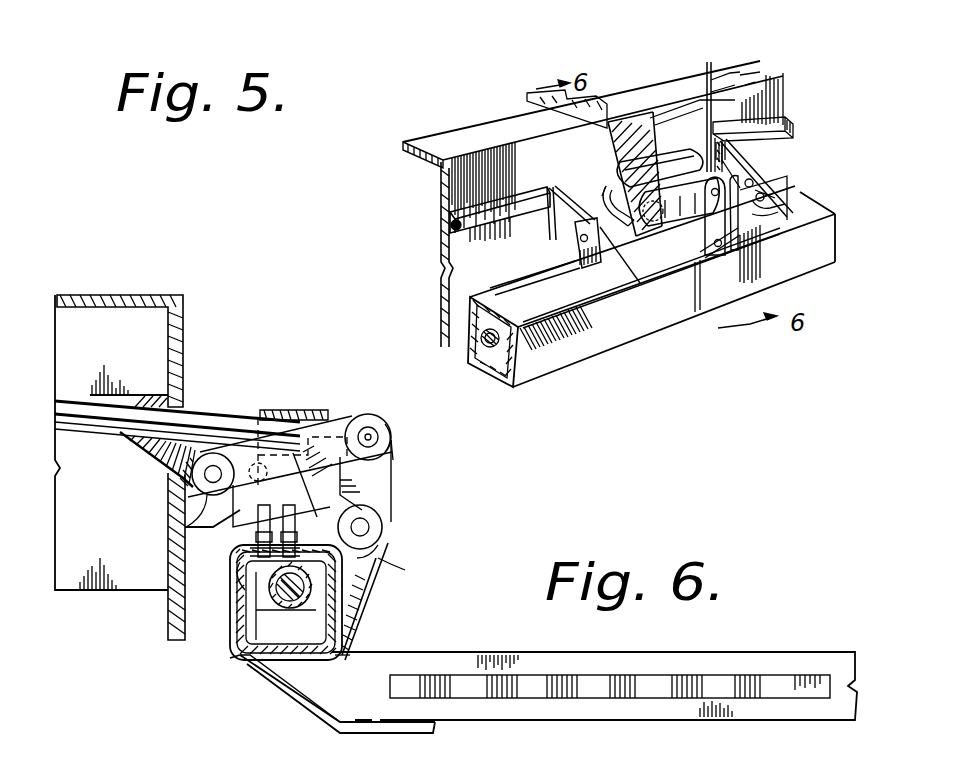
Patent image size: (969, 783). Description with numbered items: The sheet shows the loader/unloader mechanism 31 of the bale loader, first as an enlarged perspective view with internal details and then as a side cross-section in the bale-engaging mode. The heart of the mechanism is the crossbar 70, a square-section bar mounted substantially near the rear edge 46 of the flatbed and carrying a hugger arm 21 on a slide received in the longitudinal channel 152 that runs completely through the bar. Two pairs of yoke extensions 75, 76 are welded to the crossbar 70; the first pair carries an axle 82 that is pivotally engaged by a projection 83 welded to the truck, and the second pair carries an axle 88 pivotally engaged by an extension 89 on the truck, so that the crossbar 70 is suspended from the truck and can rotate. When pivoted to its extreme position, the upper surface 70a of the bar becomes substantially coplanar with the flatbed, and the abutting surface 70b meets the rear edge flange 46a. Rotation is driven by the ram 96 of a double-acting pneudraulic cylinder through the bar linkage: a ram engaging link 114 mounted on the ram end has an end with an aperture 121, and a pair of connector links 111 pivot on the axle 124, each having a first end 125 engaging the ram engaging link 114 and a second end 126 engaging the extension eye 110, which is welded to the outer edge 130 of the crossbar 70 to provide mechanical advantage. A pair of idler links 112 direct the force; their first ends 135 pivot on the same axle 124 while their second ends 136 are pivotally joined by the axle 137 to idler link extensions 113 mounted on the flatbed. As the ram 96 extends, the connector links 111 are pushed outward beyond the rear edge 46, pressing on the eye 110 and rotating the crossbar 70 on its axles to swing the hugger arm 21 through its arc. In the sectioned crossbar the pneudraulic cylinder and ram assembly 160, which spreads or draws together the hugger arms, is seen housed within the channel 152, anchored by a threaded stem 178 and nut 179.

In FIG. 6, the hugger arm 21 is at (461, 652).
In FIG. 5, the loader/unloader mechanism 31 is at (662, 160).
In FIG. 6, the loader/unloader mechanism 31 is at (241, 404).
In FIG. 5, the rear edge 46 is at (778, 92).
In FIG. 5, the rear edge flange 46a is at (758, 104).
In FIG. 5, the crossbar 70 is at (620, 346).
In FIG. 6, the crossbar 70 is at (378, 575).
In FIG. 6, the upper surface of crossbar 70a is at (284, 662).
In FIG. 5, the abutting surface 70b is at (574, 372).
In FIG. 5, the yoke extension pair 75 is at (601, 270).
In FIG. 5, the yoke extension pair 76 is at (782, 200).
In FIG. 5, the axle 82 is at (576, 241).
In FIG. 5, the projection 83 is at (570, 190).
In FIG. 5, the axle 88 is at (780, 180).
In FIG. 5, the extension 89 is at (712, 135).
In FIG. 5, the ram 96 is at (543, 103).
In FIG. 6, the extension eye 110 is at (384, 526).
In FIG. 5, the connector link 111 is at (773, 236).
In FIG. 6, the connector link 111 is at (392, 465).
In FIG. 5, the idler link 112 is at (700, 258).
In FIG. 6, the idler link 112 is at (300, 430).
In FIG. 5, the idler link extension 113 is at (636, 157).
In FIG. 6, the idler link extension 113 is at (150, 460).
In FIG. 5, the ram engaging link 114 is at (720, 153).
In FIG. 6, the ram engaging link 114 is at (330, 410).
In FIG. 6, the aperture 121 is at (366, 428).
In FIG. 6, the axle 124 is at (394, 446).
In FIG. 6, the first end of connector link 125 is at (372, 418).
In FIG. 6, the second end of connector link 126 is at (382, 553).
In FIG. 5, the outer edge of crossbar 130 is at (562, 313).
In FIG. 6, the first end of idler link 135 is at (394, 437).
In FIG. 6, the second end of idler link 136 is at (186, 510).
In FIG. 5, the axle 137 is at (612, 198).
In FIG. 6, the axle 137 is at (198, 484).
In FIG. 6, the longitudinal channel 152 is at (250, 638).
In FIG. 6, the pneudraulic cylinder and ram assembly 160 is at (312, 600).
In FIG. 6, the threaded stem 178 is at (258, 536).
In FIG. 6, the nut 179 is at (245, 571).